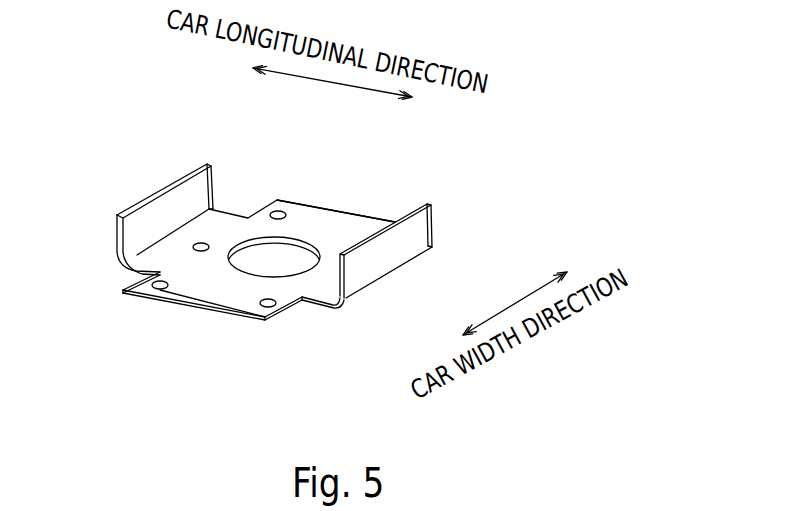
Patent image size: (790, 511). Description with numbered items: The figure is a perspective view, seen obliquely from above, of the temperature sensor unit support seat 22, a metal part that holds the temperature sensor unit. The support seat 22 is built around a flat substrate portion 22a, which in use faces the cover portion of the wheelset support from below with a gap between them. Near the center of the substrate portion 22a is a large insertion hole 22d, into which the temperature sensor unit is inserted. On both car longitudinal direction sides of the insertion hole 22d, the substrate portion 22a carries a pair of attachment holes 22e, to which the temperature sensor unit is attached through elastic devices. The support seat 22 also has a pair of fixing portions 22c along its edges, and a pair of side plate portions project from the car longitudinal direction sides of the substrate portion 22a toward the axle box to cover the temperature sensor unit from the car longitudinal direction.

The temperature sensor unit support seat 22 is at (296, 238).
The substrate portion 22a is at (260, 222).
The fixing portions 22c is at (343, 206).
The insertion hole 22d is at (288, 262).
The attachment holes 22e is at (202, 243).